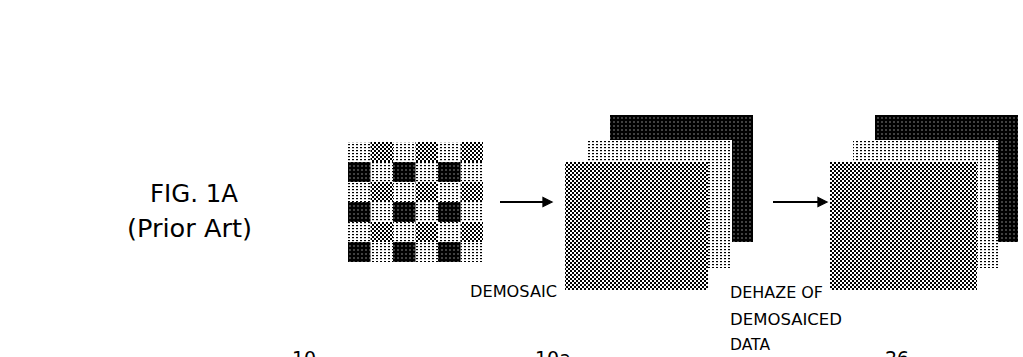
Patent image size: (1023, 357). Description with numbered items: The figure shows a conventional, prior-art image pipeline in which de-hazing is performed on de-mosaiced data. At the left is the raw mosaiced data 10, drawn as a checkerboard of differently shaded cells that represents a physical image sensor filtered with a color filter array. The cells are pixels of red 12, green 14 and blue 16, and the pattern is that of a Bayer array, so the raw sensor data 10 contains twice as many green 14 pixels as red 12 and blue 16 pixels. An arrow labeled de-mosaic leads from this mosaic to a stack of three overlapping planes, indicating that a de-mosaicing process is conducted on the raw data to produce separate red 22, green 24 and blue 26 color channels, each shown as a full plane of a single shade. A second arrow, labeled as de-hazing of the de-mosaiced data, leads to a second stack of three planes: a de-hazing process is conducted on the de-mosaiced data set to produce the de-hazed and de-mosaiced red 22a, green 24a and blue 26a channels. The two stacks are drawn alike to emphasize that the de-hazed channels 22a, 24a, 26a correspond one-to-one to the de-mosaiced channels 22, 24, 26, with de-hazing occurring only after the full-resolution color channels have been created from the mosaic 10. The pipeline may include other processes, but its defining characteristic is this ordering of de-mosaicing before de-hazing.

The raw mosaiced data 10 is at (381, 153).
The red pixels 12 is at (387, 141).
The green pixels 14 is at (447, 141).
The blue pixels 16 is at (348, 173).
The red color channel 22 is at (572, 183).
The green color channel 24 is at (587, 150).
The blue color channel 26 is at (647, 120).
The de-hazed red channel 22a is at (850, 183).
The de-hazed green channel 24a is at (868, 147).
The de-hazed blue channel 26a is at (923, 120).